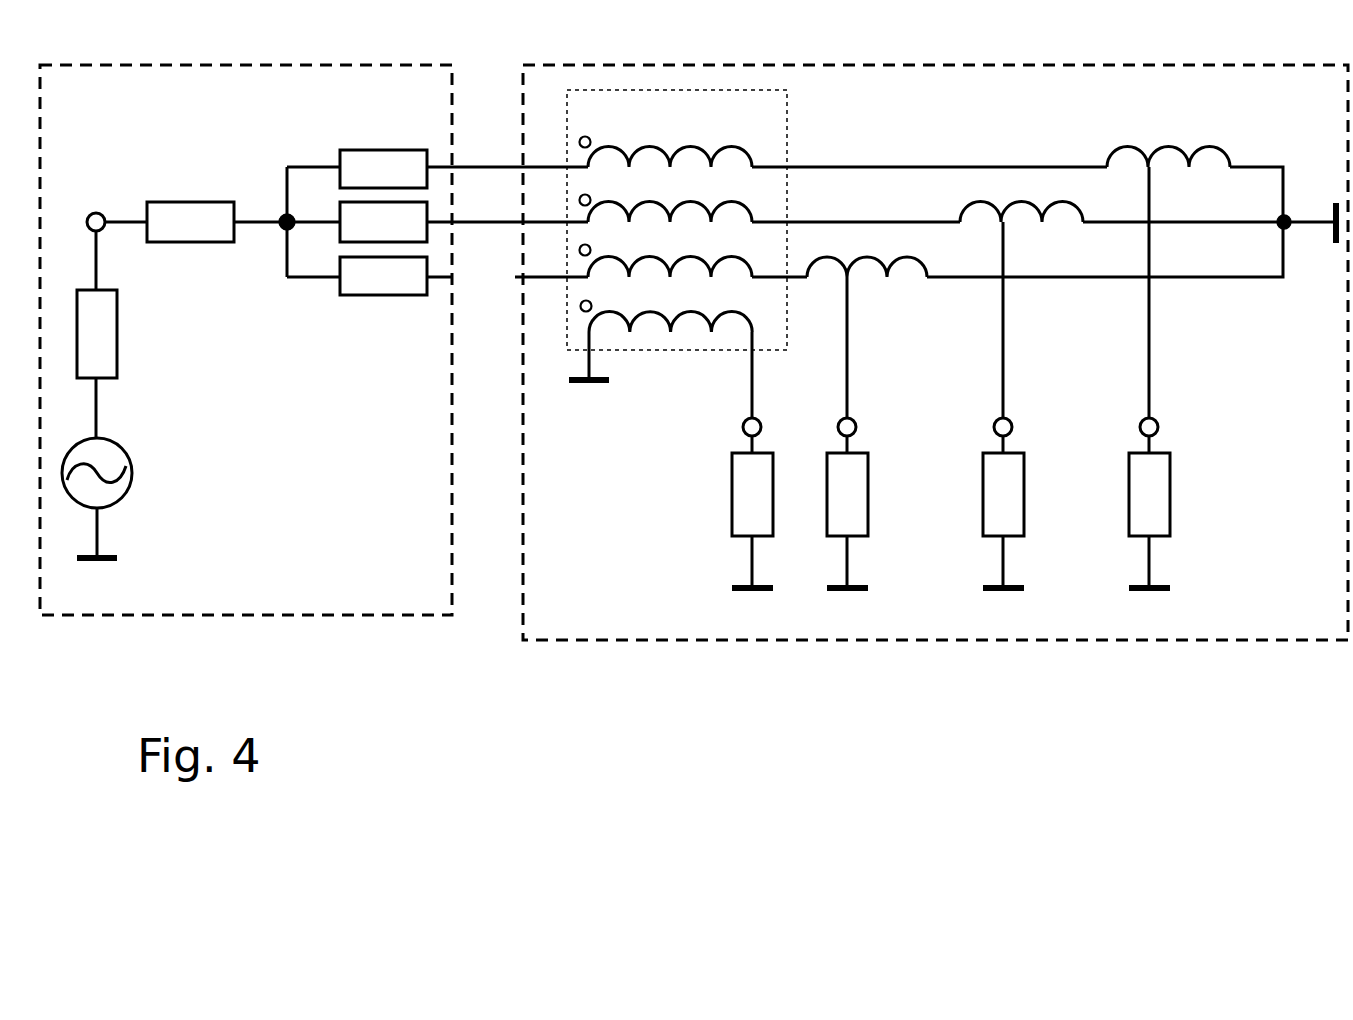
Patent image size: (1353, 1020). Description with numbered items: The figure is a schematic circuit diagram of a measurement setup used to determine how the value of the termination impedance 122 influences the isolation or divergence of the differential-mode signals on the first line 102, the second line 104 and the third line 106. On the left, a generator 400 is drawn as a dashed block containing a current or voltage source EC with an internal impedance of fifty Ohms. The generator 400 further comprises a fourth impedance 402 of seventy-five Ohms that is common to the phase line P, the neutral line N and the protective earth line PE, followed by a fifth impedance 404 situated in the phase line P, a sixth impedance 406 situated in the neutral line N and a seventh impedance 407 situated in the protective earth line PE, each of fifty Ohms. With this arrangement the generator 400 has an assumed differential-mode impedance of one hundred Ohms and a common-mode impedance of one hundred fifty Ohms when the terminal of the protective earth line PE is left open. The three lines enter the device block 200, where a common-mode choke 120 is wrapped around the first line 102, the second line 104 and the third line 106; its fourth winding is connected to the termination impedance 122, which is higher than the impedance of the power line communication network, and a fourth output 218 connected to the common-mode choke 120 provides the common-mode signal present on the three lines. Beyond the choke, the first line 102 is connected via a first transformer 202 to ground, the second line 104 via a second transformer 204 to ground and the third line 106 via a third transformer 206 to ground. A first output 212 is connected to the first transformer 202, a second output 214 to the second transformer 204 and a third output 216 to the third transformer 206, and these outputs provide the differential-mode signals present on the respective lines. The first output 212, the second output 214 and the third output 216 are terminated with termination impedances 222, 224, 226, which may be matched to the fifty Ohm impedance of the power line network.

The generator 400 is at (243, 63).
The fourth impedance 402 is at (173, 242).
The fifth impedance 404 is at (363, 143).
The sixth impedance 406 is at (363, 200).
The seventh impedance 407 is at (373, 256).
The device under test network 200 is at (1247, 65).
The common-mode choke 120 is at (703, 88).
The first line 102 is at (982, 167).
The second line 104 is at (880, 222).
The third line 106 is at (797, 277).
The first transformer 202 is at (1177, 147).
The second transformer 204 is at (1078, 200).
The third transformer 206 is at (927, 262).
The first output 212 is at (1157, 418).
The second output 214 is at (1010, 417).
The third output 216 is at (855, 418).
The fourth output 218 is at (758, 420).
The termination impedance 122 is at (773, 537).
The termination impedance 222 is at (1170, 536).
The termination impedance 224 is at (1024, 536).
The termination impedance 226 is at (868, 537).